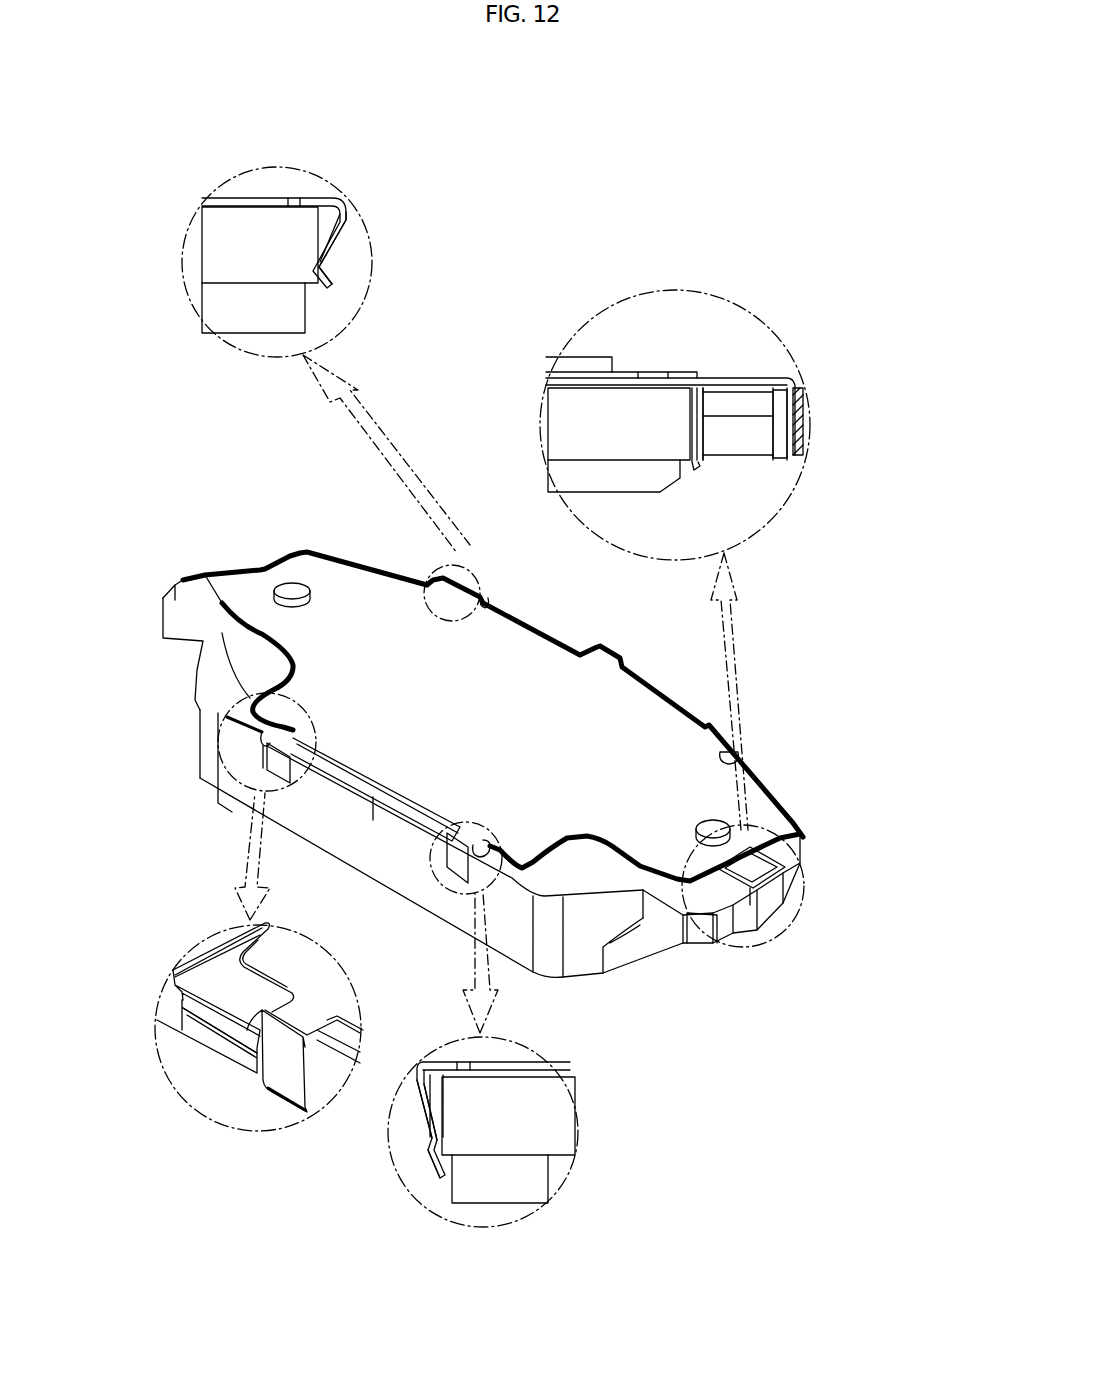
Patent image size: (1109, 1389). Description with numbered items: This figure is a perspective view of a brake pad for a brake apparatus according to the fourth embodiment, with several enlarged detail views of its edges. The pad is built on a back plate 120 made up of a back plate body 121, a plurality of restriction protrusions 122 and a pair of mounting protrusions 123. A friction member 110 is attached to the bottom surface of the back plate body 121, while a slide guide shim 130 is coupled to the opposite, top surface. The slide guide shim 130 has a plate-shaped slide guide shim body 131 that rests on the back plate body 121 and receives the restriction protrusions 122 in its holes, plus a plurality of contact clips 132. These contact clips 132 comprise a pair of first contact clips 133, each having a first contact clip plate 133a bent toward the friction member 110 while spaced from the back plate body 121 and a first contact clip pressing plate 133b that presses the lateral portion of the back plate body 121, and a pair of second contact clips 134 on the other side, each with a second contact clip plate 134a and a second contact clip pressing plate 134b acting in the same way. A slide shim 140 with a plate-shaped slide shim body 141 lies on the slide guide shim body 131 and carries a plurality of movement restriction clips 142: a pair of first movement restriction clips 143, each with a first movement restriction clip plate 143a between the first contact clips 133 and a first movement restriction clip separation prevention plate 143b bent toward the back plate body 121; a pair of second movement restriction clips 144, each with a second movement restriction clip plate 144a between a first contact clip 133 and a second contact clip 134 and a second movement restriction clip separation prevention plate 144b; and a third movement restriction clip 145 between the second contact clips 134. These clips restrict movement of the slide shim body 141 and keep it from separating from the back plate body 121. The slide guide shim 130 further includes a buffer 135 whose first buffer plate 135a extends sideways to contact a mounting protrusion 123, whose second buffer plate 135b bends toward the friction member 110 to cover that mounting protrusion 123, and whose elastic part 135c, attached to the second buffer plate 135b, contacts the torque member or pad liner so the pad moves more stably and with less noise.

The friction member 110 is at (203, 311).
The back plate 120 is at (203, 252).
The back plate body 121 is at (570, 415).
The restriction protrusion 122 is at (572, 368).
The mounting protrusion 123 is at (735, 395).
The slide guide shim 130 is at (317, 199).
The slide guide shim body 131 is at (253, 200).
The contact clip 132 is at (332, 239).
The first contact clip 133 is at (230, 733).
The first contact clip plate 133a is at (220, 1013).
The first contact clip pressing plate 133b is at (230, 1052).
The second contact clip 134 is at (447, 580).
The second contact clip plate 134a is at (333, 225).
The second contact clip pressing plate 134b is at (327, 274).
The buffer 135 is at (905, 395).
The first buffer plate 135a is at (775, 375).
The second buffer plate 135b is at (797, 391).
The elastic part 135c is at (803, 401).
The slide shim 140 is at (541, 675).
The slide shim body 141 is at (623, 375).
The movement restriction clip 142 is at (424, 1109).
The first movement restriction clip 143 is at (277, 758).
The first movement restriction clip plate 143a is at (438, 1097).
The first movement restriction clip separation prevention plate 143b is at (440, 1140).
The second movement restriction clip 144 is at (837, 888).
The second movement restriction clip plate 144a is at (704, 417).
The second movement restriction clip separation prevention plate 144b is at (704, 460).
The third movement restriction clip 145 is at (605, 667).